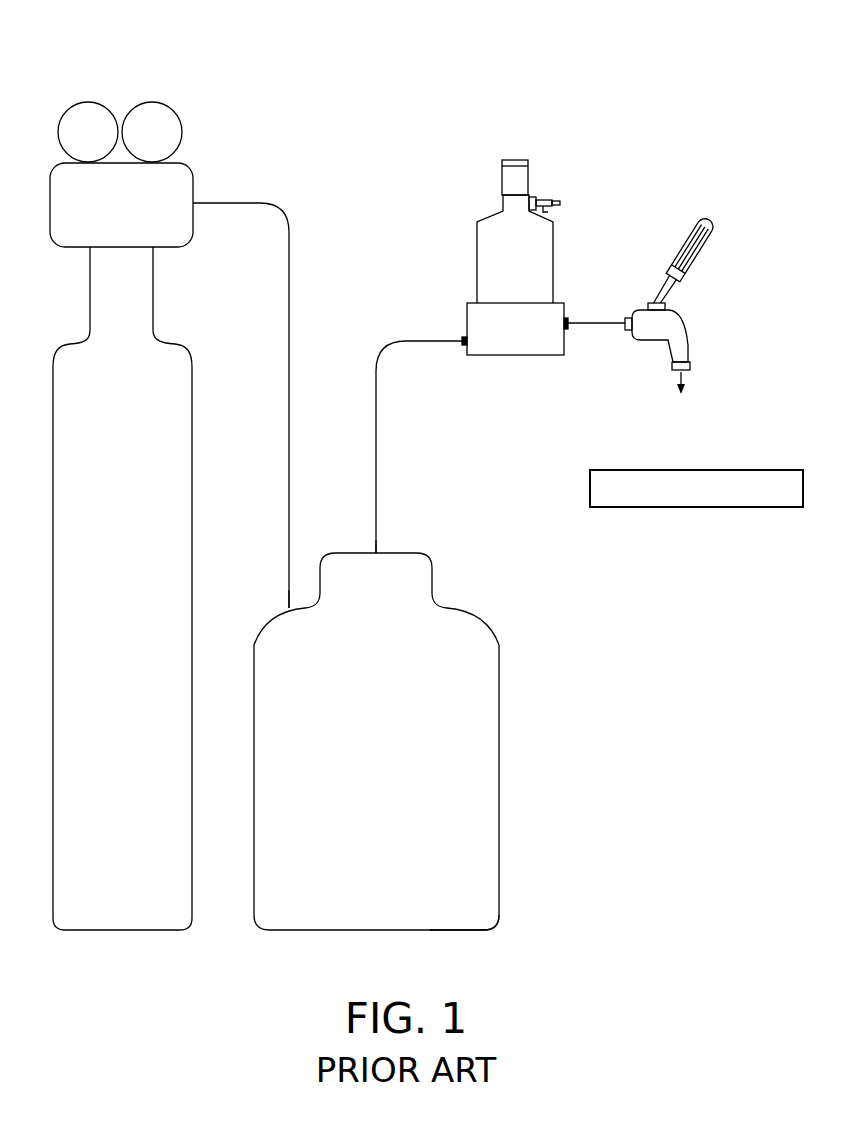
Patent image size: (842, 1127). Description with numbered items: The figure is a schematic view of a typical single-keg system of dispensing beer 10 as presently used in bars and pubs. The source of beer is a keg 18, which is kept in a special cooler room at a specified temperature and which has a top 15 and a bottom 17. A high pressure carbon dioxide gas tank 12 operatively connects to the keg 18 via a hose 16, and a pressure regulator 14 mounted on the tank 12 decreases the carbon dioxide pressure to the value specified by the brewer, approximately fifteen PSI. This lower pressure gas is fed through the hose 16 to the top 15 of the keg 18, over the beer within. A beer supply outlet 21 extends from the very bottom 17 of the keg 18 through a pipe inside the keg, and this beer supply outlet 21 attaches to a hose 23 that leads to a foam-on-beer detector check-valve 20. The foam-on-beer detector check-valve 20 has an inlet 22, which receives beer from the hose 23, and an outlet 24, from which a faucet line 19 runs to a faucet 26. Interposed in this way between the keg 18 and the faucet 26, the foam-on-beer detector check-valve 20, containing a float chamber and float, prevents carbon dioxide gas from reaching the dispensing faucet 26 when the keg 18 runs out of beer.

The system of dispensing beer 10 is at (274, 50).
The high pressure carbon dioxide gas tank 12 is at (109, 689).
The pressure regulator 14 is at (109, 231).
The top 15 is at (264, 598).
The hose 16 is at (289, 428).
The bottom 17 is at (464, 932).
The keg 18 is at (364, 801).
The faucet line 19 is at (595, 322).
The foam-on-beer detector check-valve 20 is at (470, 190).
The beer supply outlet 21 is at (378, 553).
The inlet 22 is at (463, 345).
The hose 23 is at (377, 443).
The outlet 24 is at (567, 330).
The faucet 26 is at (683, 322).